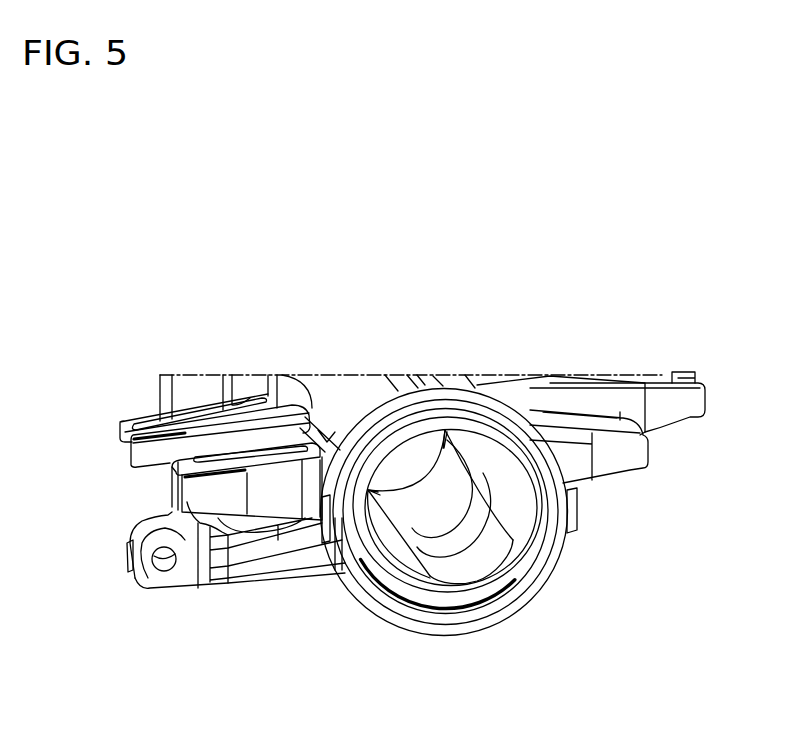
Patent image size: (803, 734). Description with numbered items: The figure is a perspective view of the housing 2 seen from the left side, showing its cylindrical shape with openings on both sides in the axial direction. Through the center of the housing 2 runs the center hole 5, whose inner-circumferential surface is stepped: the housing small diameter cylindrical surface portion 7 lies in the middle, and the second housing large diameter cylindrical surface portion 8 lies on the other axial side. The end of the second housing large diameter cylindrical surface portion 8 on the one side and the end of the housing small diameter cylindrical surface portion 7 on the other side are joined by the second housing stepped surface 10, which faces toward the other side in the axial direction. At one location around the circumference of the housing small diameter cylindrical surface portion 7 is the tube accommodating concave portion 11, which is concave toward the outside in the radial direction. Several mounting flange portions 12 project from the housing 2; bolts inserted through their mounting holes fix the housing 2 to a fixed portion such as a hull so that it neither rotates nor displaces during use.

The housing 2 is at (508, 355).
The center hole 5 is at (387, 537).
The housing small diameter cylindrical surface portion 7 is at (492, 470).
The second housing large diameter cylindrical surface portion 8 is at (510, 585).
The second housing stepped surface 10 is at (523, 516).
The tube accommodating concave portion 11 is at (475, 560).
The mounting flange portion 12 is at (147, 473).